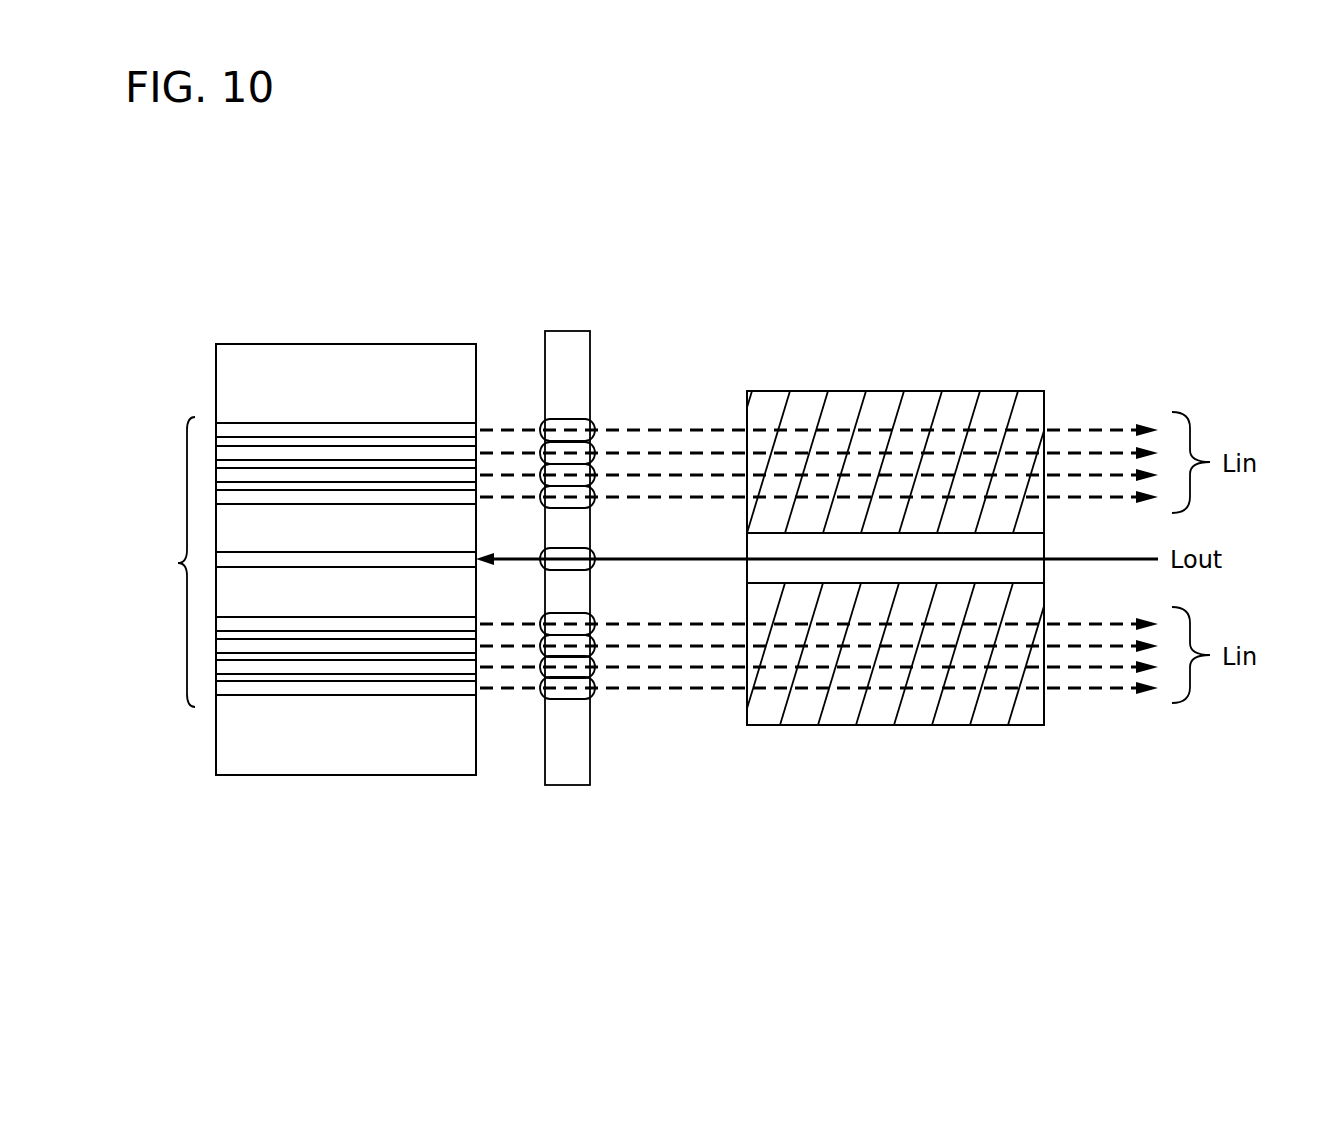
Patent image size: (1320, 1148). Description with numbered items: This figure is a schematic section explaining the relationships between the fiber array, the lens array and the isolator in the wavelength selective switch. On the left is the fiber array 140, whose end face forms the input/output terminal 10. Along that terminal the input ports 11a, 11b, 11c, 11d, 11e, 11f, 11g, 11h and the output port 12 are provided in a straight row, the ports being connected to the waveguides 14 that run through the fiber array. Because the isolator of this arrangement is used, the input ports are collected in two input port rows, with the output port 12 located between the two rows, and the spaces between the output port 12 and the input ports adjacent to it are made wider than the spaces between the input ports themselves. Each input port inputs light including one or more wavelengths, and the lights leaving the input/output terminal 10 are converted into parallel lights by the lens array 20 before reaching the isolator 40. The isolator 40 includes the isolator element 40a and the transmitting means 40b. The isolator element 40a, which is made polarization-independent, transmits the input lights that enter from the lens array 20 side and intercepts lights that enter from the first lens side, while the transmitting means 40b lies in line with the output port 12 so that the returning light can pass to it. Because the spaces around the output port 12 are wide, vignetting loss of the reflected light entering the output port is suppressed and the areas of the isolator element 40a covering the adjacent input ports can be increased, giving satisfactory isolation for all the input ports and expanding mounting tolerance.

The input/output terminal 10 is at (477, 776).
The fiber array 140 is at (245, 344).
The input port 11a is at (476, 430).
The input port 11b is at (476, 453).
The input port 11c is at (476, 475).
The input port 11d is at (476, 497).
The input port 11e is at (476, 624).
The input port 11f is at (476, 646).
The input port 11g is at (476, 667).
The input port 11h is at (476, 688).
The output port 12 is at (474, 557).
The waveguides 14 is at (167, 562).
The lens array 20 is at (557, 331).
The isolator 40 is at (888, 546).
The isolator element 40a is at (1044, 400).
The transmitting means 40b is at (1044, 573).